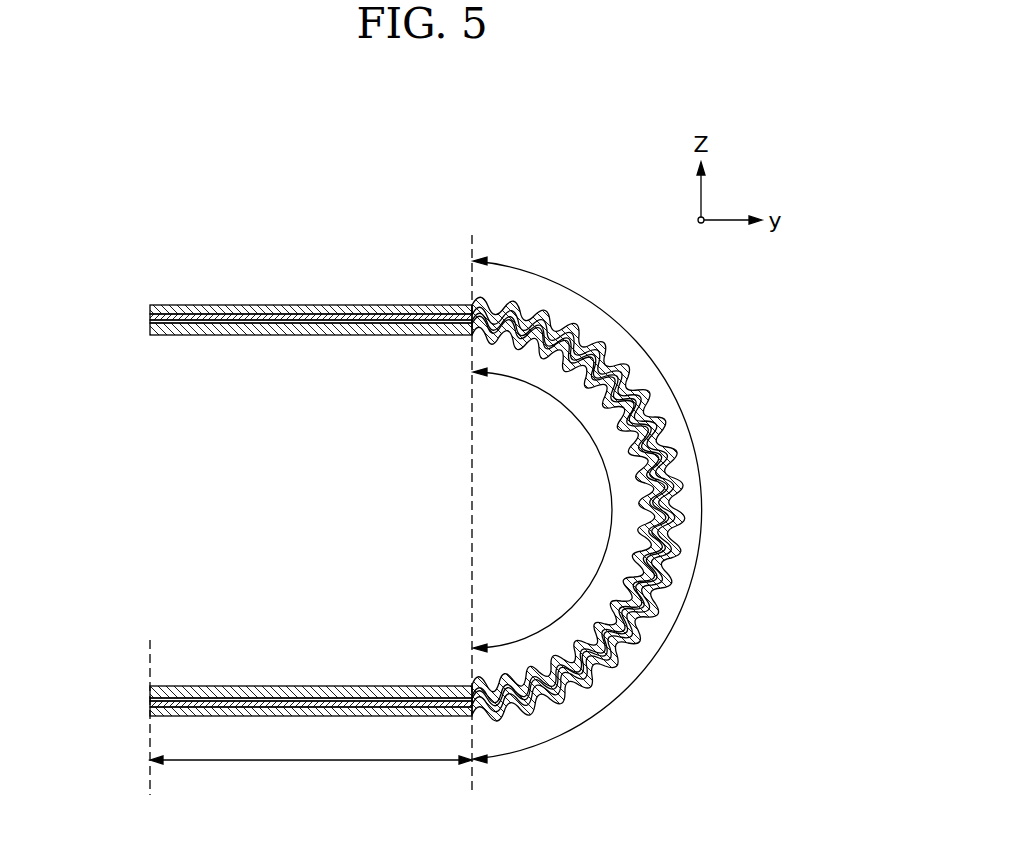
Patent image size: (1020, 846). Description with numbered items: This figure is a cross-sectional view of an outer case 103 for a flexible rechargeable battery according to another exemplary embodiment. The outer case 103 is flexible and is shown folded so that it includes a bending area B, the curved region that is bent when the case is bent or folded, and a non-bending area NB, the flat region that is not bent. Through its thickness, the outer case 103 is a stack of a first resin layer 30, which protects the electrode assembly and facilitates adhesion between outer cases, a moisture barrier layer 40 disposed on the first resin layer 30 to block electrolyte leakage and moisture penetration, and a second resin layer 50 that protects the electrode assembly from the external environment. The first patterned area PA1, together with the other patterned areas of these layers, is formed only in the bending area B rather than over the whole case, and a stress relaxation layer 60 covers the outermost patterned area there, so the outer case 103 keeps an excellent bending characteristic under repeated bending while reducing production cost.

The outer case 103 is at (410, 150).
The first resin layer 30 is at (152, 715).
The moisture barrier layer 40 is at (152, 701).
The second resin layer 50 is at (152, 686).
The stress relaxation layer 60 is at (476, 738).
The non-bending area NB is at (311, 515).
The bending area B is at (608, 510).
The first patterned area PA1 is at (546, 510).